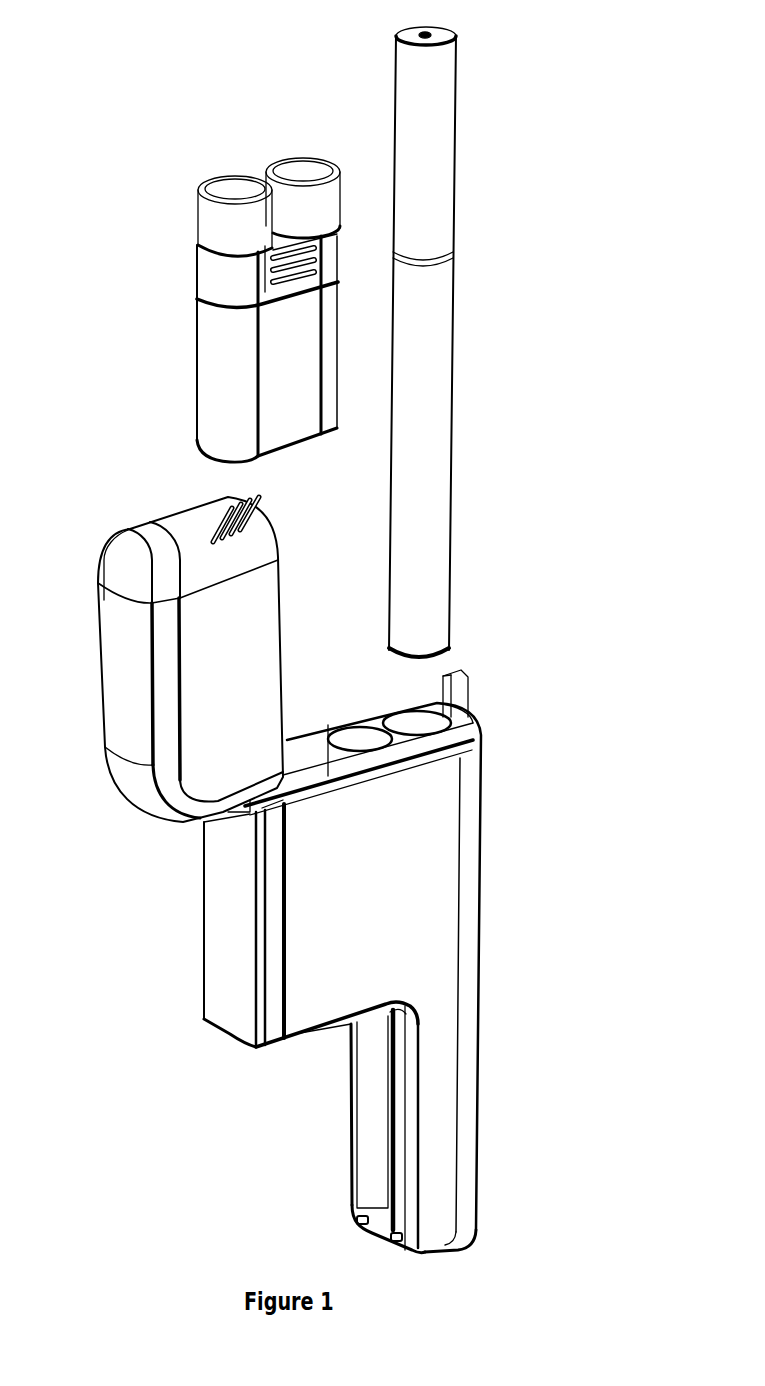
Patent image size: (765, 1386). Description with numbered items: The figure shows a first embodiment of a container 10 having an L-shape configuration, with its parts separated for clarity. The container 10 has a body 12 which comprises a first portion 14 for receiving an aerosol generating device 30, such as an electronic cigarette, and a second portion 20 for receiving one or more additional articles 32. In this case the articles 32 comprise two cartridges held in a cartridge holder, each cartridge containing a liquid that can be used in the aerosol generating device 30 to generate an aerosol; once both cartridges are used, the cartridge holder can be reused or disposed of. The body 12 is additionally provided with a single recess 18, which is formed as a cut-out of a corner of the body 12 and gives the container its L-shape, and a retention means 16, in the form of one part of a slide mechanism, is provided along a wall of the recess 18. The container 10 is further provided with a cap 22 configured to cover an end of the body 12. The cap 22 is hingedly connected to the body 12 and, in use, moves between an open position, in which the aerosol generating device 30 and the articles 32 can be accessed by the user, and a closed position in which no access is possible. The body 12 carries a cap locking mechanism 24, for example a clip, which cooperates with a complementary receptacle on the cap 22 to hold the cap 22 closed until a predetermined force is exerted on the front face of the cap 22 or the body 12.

The container 10 is at (401, 950).
The body 12 is at (483, 968).
The first portion 14 is at (398, 712).
The retention means 16 is at (348, 1190).
The recess 18 is at (303, 1101).
The second portion 20 is at (324, 728).
The cap 22 is at (100, 690).
The cap locking mechanism 24 is at (470, 682).
The aerosol generating device 30 is at (453, 387).
The articles 32 is at (192, 357).